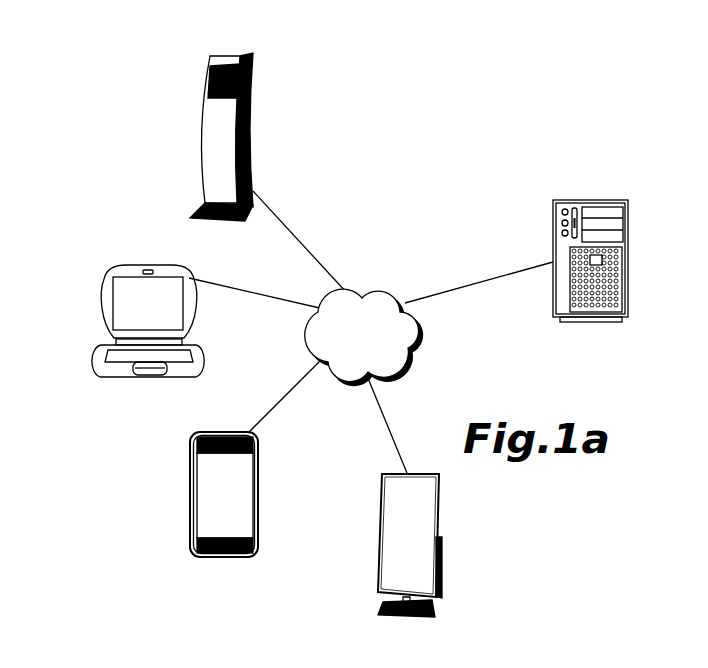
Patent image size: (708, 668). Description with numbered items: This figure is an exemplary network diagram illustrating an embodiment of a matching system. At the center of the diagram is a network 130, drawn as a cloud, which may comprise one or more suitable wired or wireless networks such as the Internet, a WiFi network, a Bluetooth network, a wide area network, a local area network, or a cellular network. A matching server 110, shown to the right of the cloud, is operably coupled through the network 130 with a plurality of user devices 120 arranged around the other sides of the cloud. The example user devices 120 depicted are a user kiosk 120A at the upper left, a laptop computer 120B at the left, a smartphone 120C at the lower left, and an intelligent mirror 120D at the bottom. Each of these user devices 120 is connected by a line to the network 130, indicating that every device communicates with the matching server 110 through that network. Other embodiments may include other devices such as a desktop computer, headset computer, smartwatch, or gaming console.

The matching server 110 is at (601, 200).
The user devices 120 is at (237, 349).
The user kiosk 120A is at (203, 112).
The laptop computer 120B is at (101, 292).
The smartphone 120C is at (190, 462).
The intelligent mirror 120D is at (373, 537).
The network 130 is at (422, 333).